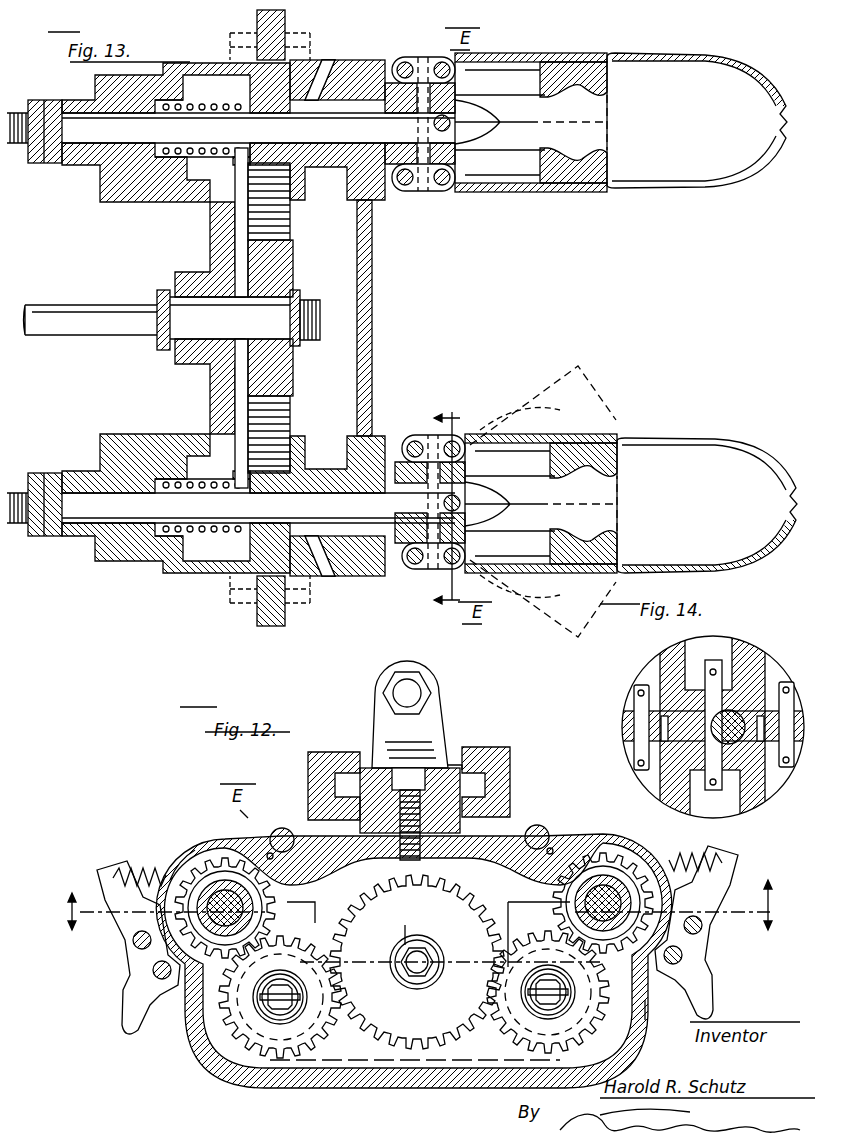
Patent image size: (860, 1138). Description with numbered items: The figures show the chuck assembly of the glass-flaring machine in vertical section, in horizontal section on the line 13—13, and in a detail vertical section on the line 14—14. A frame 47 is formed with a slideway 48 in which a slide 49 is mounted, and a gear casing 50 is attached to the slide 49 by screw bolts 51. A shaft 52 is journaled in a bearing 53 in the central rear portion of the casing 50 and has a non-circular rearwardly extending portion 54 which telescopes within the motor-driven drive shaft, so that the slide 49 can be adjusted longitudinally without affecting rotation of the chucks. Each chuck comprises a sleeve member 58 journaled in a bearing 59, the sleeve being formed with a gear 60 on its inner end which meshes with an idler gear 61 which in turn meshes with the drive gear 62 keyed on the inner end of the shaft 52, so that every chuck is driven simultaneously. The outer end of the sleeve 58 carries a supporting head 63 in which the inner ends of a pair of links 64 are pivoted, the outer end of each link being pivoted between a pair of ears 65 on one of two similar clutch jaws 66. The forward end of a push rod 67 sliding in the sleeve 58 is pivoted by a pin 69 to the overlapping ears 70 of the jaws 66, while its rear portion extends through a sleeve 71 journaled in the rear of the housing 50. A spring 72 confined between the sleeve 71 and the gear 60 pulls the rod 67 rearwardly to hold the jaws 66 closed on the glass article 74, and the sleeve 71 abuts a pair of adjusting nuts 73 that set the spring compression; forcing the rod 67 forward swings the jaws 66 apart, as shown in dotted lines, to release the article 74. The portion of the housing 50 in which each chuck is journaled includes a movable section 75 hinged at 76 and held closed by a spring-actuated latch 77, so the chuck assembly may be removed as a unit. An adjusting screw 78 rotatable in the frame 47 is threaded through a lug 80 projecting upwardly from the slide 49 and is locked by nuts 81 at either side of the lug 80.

In FIG. 12, the line 13— 13 is at (421, 905).
In FIG. 13, the line 14— 14 is at (447, 509).
In FIG. 12, the frame 47 is at (512, 803).
In FIG. 12, the slideway 48 is at (487, 785).
In FIG. 12, the slide 49 is at (456, 756).
In FIG. 13, the gear casing 50 is at (215, 390).
In FIG. 12, the gear casing 50 is at (380, 1088).
In FIG. 12, the screw bolts 51 is at (392, 772).
In FIG. 13, the shaft 52 is at (176, 324).
In FIG. 12, the shaft 52 is at (404, 925).
In FIG. 13, the bearing 53 is at (168, 352).
In FIG. 13, the non-circular rearwardly extending portion 54 is at (28, 336).
In FIG. 13, the sleeve member 58 is at (320, 65).
In FIG. 12, the sleeve member 58 is at (190, 862).
In FIG. 13, the bearing 59 is at (340, 75).
In FIG. 13, the gear 60 is at (243, 152).
In FIG. 12, the gear 60 is at (266, 914).
In FIG. 13, the idler gear 61 is at (292, 224).
In FIG. 12, the idler gear 61 is at (248, 1048).
In FIG. 13, the drive gear 62 is at (293, 270).
In FIG. 12, the drive gear 62 is at (363, 904).
In FIG. 13, the supporting head 63 is at (400, 66).
In FIG. 13, the links 64 is at (423, 60).
In FIG. 14, the links 64 is at (628, 730).
In FIG. 14, the ears 65 is at (634, 700).
In FIG. 13, the clutch jaws 66 is at (545, 54).
In FIG. 13, the push rod 67 is at (348, 62).
In FIG. 14, the push rod 67 is at (686, 792).
In FIG. 12, the push rod 67 is at (182, 872).
In FIG. 13, the pin 69 is at (448, 115).
In FIG. 14, the pin 69 is at (716, 792).
In FIG. 14, the overlapping ears 70 is at (690, 690).
In FIG. 13, the sleeve 71 is at (78, 150).
In FIG. 13, the spring 72 is at (173, 163).
In FIG. 13, the adjusting nuts 73 is at (40, 160).
In FIG. 13, the glass article 74 is at (700, 55).
In FIG. 13, the movable section 75 is at (238, 36).
In FIG. 12, the movable section 75 is at (204, 886).
In FIG. 12, the hinge 76 is at (282, 828).
In FIG. 13, the spring-actuated latch 77 is at (257, 14).
In FIG. 12, the spring-actuated latch 77 is at (114, 930).
In FIG. 12, the adjusting screw 78 is at (412, 690).
In FIG. 12, the lug 80 is at (446, 714).
In FIG. 12, the nuts 81 is at (428, 698).